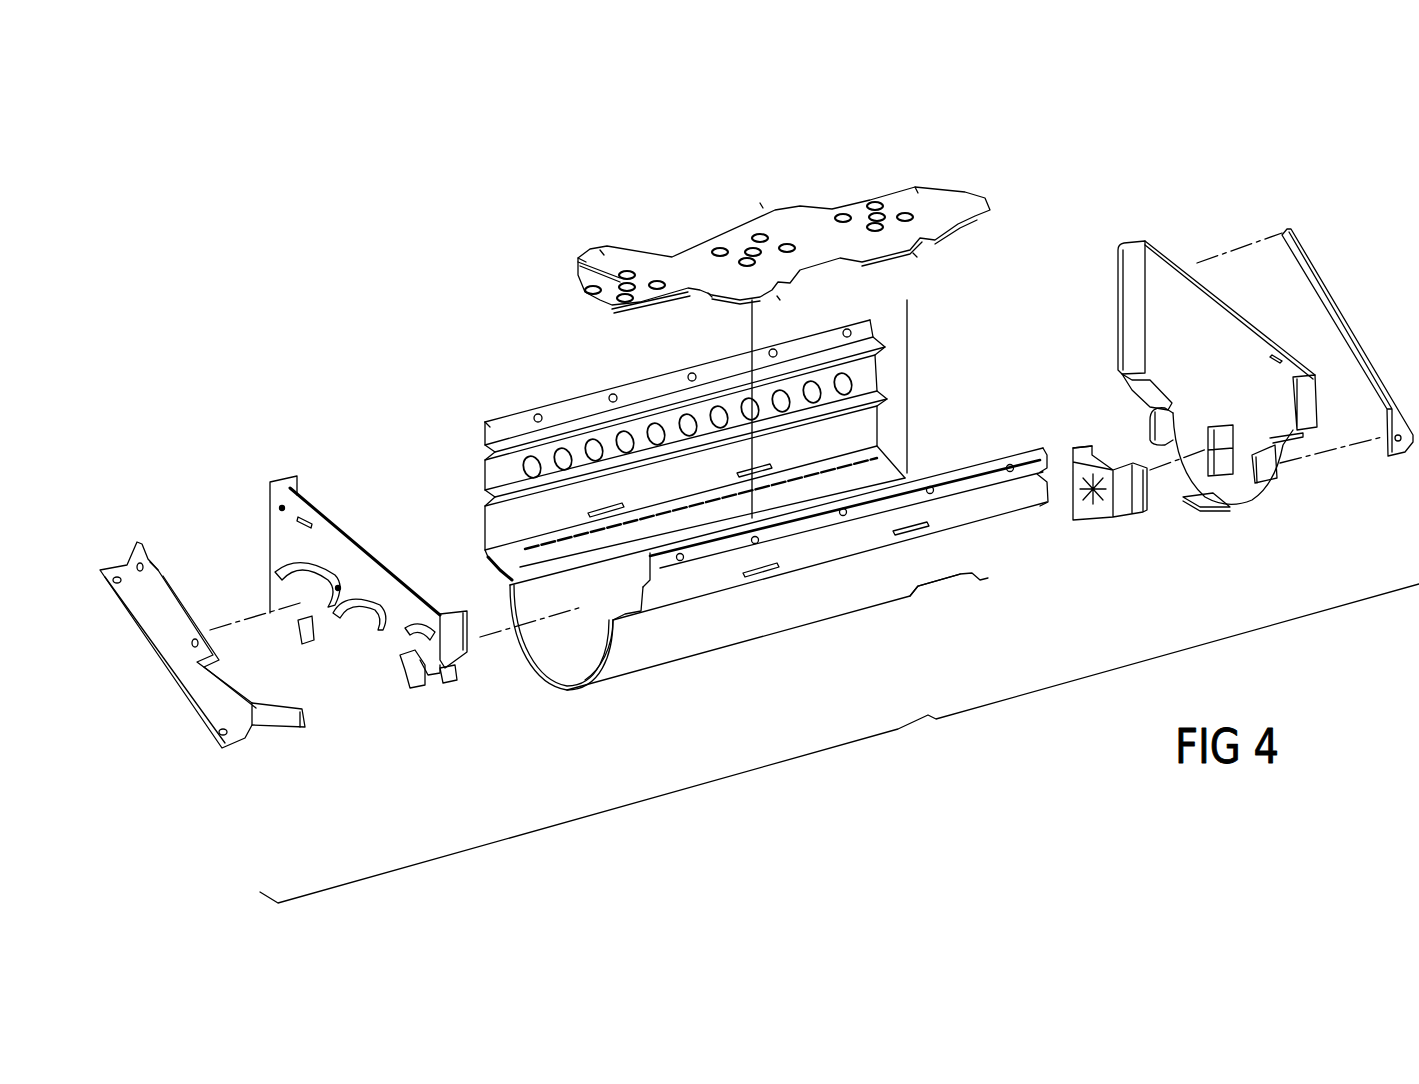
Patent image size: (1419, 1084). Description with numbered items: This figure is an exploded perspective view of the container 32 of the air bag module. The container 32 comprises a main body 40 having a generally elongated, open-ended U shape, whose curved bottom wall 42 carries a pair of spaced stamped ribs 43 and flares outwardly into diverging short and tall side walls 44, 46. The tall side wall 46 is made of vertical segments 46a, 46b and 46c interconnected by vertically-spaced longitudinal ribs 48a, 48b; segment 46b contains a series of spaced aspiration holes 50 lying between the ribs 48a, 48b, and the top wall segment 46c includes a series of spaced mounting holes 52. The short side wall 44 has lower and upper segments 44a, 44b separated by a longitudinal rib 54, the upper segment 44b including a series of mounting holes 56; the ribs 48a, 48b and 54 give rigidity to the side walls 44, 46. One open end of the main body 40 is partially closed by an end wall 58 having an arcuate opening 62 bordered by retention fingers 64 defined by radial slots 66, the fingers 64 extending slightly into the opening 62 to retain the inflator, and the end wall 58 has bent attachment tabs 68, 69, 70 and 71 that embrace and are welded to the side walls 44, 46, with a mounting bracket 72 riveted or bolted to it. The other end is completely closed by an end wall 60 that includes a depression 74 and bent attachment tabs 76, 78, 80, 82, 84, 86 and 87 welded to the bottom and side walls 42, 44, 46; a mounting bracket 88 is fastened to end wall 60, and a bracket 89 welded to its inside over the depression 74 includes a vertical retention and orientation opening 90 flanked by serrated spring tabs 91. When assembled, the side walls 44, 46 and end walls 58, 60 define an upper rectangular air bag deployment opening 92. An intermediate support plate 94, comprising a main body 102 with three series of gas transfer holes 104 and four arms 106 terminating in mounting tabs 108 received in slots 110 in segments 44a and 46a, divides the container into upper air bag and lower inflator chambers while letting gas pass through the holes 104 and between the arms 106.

The container 32 is at (839, 743).
The main body 40 is at (776, 559).
The curved bottom wall 42 is at (566, 691).
The stamped ribs 43 is at (960, 576).
The short side wall 44 is at (612, 682).
The lower segment 44a is at (880, 598).
The upper segment 44b is at (988, 460).
The tall side wall 46 is at (679, 433).
The vertical segment 46a is at (485, 525).
The vertical segment 46b is at (485, 478).
The top wall segment 46c is at (485, 430).
The longitudinal rib 48a is at (887, 396).
The longitudinal rib 48b is at (885, 342).
The aspiration holes 50 is at (590, 439).
The mounting holes 52 is at (533, 417).
The longitudinal rib 54 is at (641, 582).
The mounting holes 56 is at (683, 561).
The end wall 58 is at (410, 690).
The end wall 60 is at (1205, 368).
The arcuate opening 62 is at (347, 589).
The retention fingers 64 is at (352, 650).
The radial slots 66 is at (285, 576).
The attachment tab 68 is at (290, 480).
The attachment tab 69 is at (297, 632).
The attachment tab 70 is at (462, 610).
The attachment tab 71 is at (455, 670).
The mounting bracket 72 is at (188, 690).
The depression 74 is at (1208, 446).
The attachment tab 76 is at (1120, 302).
The attachment tab 78 is at (1138, 392).
The attachment tab 80 is at (1150, 420).
The attachment tab 82 is at (1207, 510).
The attachment tab 84 is at (1280, 468).
The attachment tab 86 is at (1302, 436).
The attachment tab 87 is at (1293, 380).
The mounting bracket 88 is at (1346, 332).
The bracket 89 is at (1117, 513).
The retention and orientation opening 90 is at (1093, 504).
The serrated spring tabs 91 is at (1085, 508).
The air bag deployment opening 92 is at (535, 412).
The intermediate support plate 94 is at (742, 234).
The main body 102 is at (665, 272).
The gas transfer holes 104 is at (877, 212).
The arms 106 is at (578, 259).
The mounting tabs 108 is at (600, 248).
The slots 110 is at (588, 513).